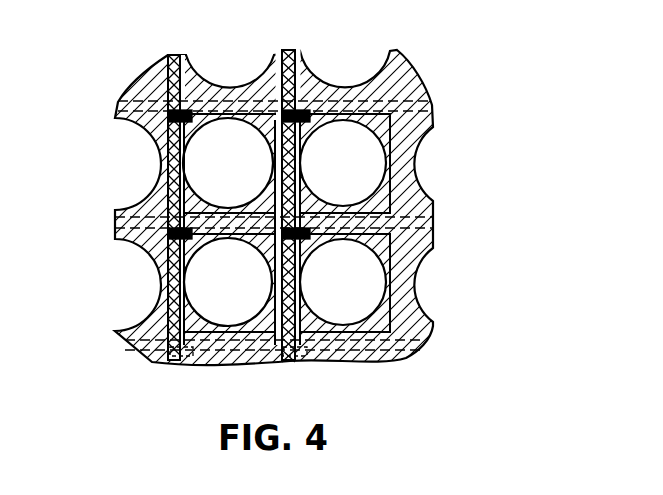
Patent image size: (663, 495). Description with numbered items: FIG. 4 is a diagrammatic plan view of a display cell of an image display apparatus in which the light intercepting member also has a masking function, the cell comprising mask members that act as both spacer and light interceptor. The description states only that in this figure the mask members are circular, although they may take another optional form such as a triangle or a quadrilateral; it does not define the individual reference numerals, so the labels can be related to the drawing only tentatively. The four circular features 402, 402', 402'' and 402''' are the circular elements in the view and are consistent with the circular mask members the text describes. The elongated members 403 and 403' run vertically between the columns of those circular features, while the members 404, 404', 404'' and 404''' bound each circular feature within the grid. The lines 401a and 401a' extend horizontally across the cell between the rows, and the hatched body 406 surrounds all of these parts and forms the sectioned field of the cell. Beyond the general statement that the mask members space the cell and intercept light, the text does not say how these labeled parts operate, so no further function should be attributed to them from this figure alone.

The pressure chamber plate (dashed section line) 401a is at (317, 95).
The pressure chamber plate (dashed section line) 401a' is at (315, 214).
The cylindrical cavity 402 is at (185, 163).
The cylindrical cavity 402' is at (343, 162).
The cylindrical cavity 402'' is at (185, 282).
The cylindrical cavity 402''' is at (343, 281).
The supply rod 403 is at (153, 188).
The supply rod 403' is at (303, 183).
The cell frame 404 is at (230, 198).
The cell frame 404' is at (345, 197).
The cell frame 404'' is at (221, 323).
The cell frame 404''' is at (349, 324).
The block body 406 is at (413, 272).